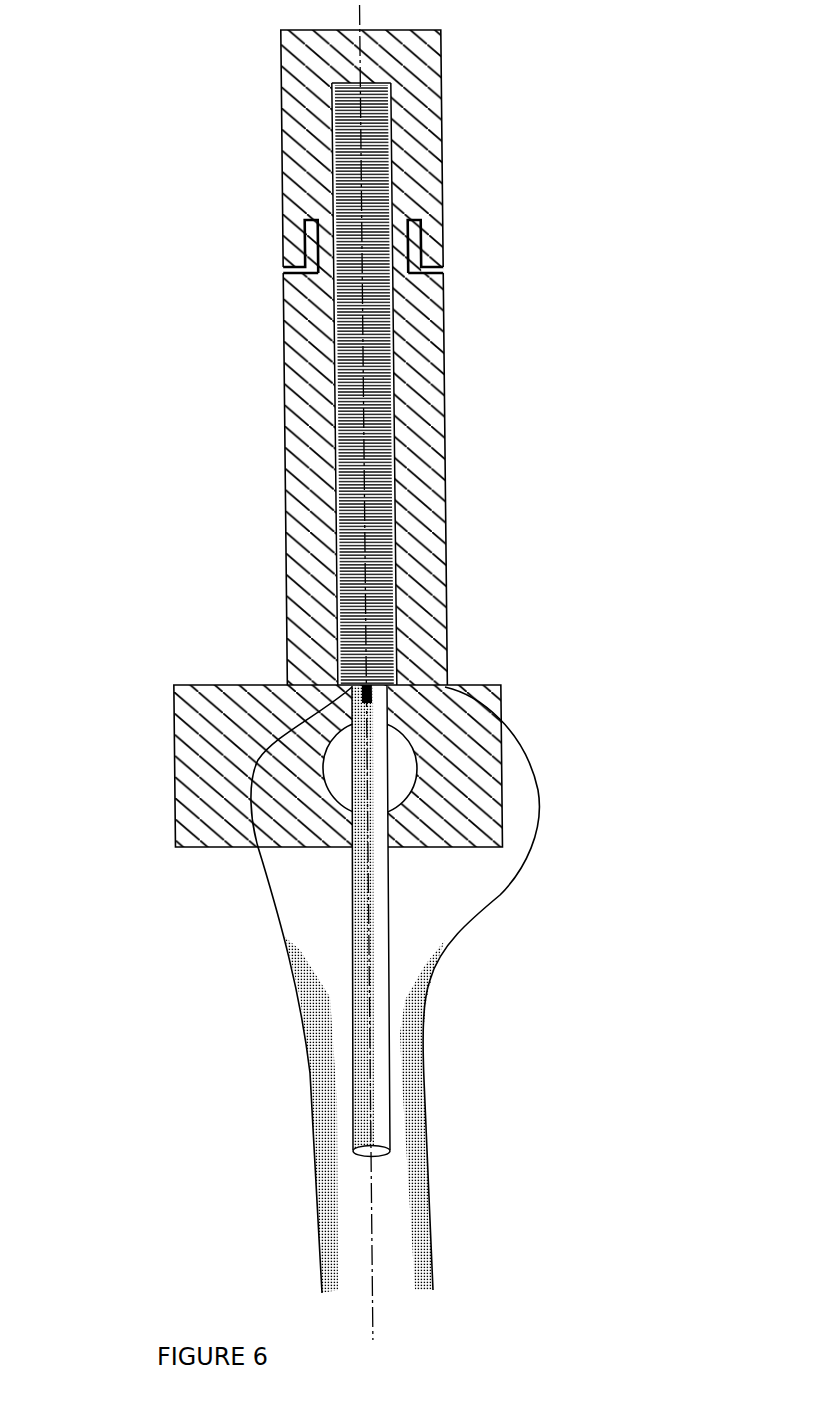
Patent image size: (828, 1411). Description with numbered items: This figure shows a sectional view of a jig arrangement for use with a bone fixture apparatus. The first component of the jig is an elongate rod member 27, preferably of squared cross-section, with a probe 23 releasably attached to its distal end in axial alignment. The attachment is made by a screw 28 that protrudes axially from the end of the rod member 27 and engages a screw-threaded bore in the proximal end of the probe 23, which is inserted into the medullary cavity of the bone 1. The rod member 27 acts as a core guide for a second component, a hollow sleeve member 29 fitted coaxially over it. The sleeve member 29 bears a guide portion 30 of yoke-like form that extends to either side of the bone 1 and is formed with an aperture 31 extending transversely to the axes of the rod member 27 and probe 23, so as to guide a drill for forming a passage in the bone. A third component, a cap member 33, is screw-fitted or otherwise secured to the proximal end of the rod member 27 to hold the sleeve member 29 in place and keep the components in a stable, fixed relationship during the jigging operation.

The bone 1 is at (320, 1098).
The probe 23 is at (353, 999).
The rod member 27 is at (383, 413).
The screw 28 is at (374, 703).
The sleeve member 29 is at (432, 575).
The guide portion 30 is at (212, 683).
The aperture 31 is at (403, 785).
The cap member 33 is at (430, 147).